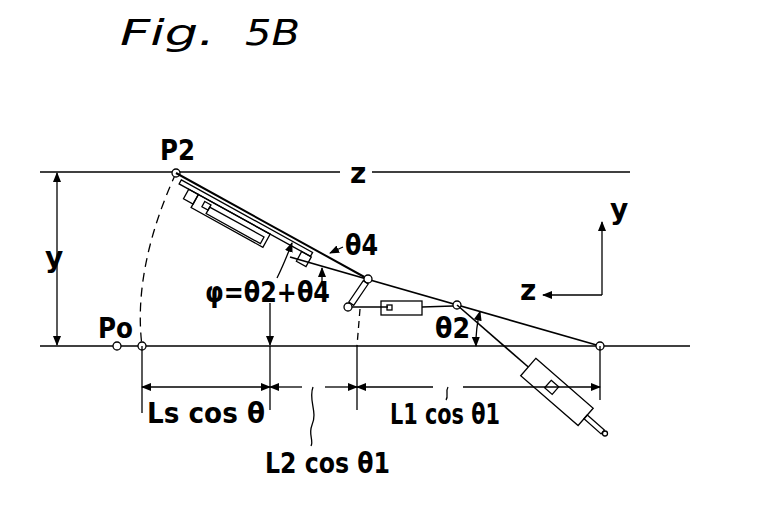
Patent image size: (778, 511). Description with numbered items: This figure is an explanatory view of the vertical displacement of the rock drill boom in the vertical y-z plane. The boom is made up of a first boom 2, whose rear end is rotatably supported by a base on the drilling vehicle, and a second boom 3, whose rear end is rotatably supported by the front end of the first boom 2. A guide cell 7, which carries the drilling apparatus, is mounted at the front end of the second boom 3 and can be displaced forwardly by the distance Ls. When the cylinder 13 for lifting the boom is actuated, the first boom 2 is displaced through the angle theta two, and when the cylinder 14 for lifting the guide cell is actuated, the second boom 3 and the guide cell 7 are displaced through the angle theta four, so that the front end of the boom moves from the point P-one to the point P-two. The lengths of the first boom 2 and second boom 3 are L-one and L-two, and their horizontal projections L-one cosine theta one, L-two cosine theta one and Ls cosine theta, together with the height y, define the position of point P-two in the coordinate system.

The first boom 2 is at (428, 296).
The second boom 3 is at (272, 226).
The guide cell 7 is at (239, 207).
The cylinder for lifting the boom 13 is at (556, 412).
The cylinder for lifting the guide cell 14 is at (403, 301).